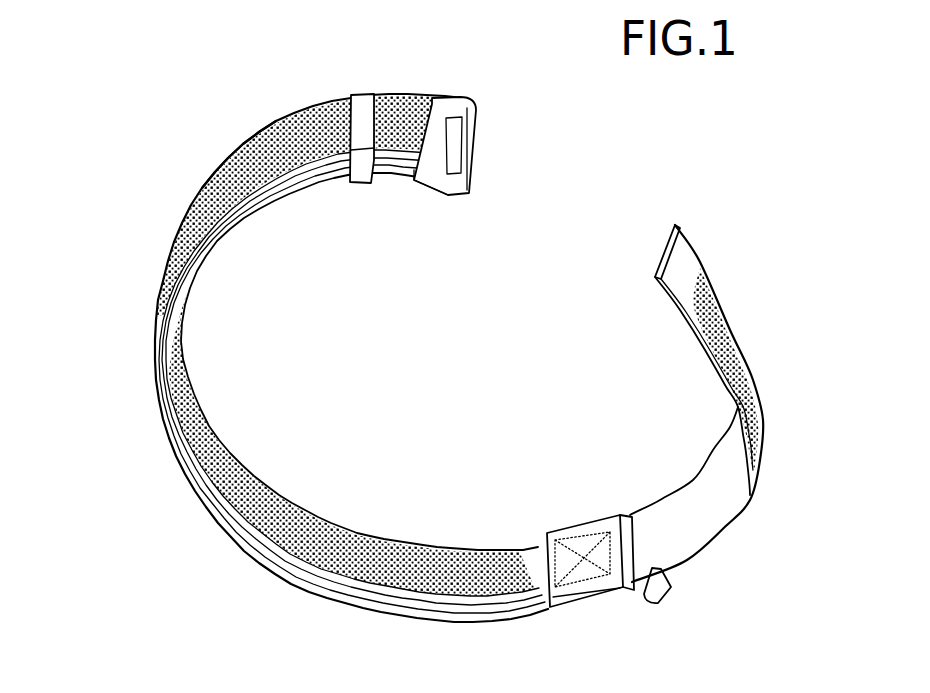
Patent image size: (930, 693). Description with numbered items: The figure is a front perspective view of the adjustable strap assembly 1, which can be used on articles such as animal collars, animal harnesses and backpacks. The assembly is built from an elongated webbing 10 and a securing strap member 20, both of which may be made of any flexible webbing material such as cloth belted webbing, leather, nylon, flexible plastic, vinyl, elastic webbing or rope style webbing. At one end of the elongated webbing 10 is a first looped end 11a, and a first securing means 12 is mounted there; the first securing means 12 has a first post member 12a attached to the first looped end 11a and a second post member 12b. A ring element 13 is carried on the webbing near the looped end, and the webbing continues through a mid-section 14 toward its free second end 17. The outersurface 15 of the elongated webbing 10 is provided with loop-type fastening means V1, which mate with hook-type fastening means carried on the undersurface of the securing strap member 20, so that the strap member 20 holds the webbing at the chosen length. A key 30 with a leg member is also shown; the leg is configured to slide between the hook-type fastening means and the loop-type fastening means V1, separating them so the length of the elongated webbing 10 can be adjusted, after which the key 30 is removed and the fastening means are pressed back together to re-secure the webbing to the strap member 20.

The adjustable strap assembly 1 is at (160, 542).
The elongated webbing 10 is at (150, 362).
The first looped end 11a is at (419, 113).
The first securing means 12 is at (470, 97).
The first post member 12a is at (418, 180).
The second post member 12b is at (478, 140).
The ring element 13 is at (363, 97).
The mid-section 14 is at (335, 545).
The outersurface 15 is at (750, 345).
The second end 17 is at (678, 245).
The securing strap member 20 is at (572, 546).
The key 30 is at (670, 582).
The loop-type fastening means V1 is at (230, 155).